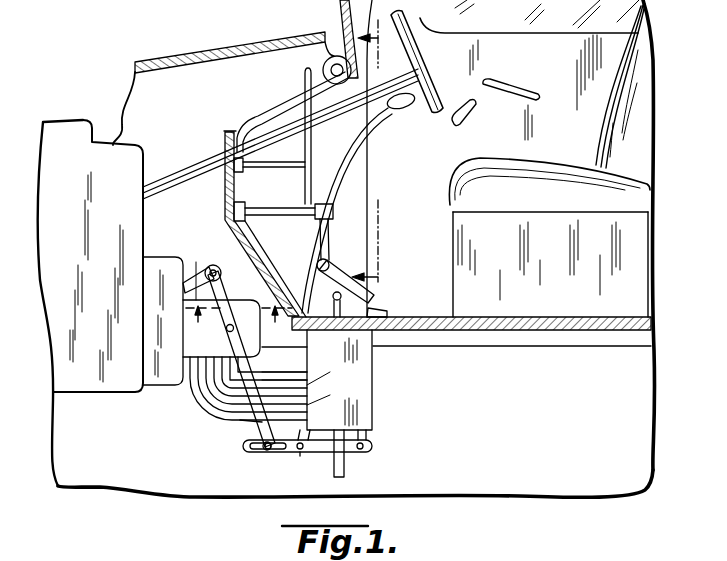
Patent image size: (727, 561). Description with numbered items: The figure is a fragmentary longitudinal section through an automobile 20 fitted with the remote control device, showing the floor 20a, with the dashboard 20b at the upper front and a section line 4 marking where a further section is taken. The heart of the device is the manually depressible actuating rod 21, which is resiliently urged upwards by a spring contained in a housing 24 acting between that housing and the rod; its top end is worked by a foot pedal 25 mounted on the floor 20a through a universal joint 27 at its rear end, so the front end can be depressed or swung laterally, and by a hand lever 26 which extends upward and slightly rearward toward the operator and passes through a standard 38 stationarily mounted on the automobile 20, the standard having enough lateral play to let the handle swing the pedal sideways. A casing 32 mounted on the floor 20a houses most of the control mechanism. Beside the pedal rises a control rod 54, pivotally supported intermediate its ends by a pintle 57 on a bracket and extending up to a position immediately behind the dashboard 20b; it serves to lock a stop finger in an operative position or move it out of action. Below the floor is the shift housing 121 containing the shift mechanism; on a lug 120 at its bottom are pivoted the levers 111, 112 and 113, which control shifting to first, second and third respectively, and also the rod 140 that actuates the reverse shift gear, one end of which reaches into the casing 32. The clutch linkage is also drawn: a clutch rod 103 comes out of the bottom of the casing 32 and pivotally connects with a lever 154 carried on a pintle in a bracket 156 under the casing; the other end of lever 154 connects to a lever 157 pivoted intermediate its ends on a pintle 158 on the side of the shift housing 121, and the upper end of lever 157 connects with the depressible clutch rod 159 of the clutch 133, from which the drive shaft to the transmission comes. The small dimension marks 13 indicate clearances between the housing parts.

The automobile 20 is at (150, 68).
The floor 20a is at (425, 340).
The dashboard 20b is at (330, 60).
The section line 4 is at (372, 153).
The control rod 54 is at (322, 164).
The hand lever 26 is at (346, 150).
The pintle 57 is at (262, 174).
The standard 38 is at (332, 219).
The actuating rod 21 is at (296, 298).
The foot pedal 25 is at (360, 292).
The universal joint 27 is at (388, 309).
The depressible clutch rod 159 is at (197, 262).
The shift housing 121 is at (185, 262).
The lever 157 is at (216, 265).
The pintle 158 is at (245, 302).
The clearance 13 is at (245, 328).
The clutch 133 is at (152, 384).
The rod 140 is at (197, 400).
The lug 120 is at (246, 424).
The lever 111 is at (285, 379).
The lever 112 is at (305, 387).
The lever 113 is at (300, 407).
The casing 32 is at (372, 377).
The clutch rod 103 is at (366, 440).
The lever 154 is at (374, 447).
The bracket 156 is at (300, 452).
The housing 24 is at (346, 466).